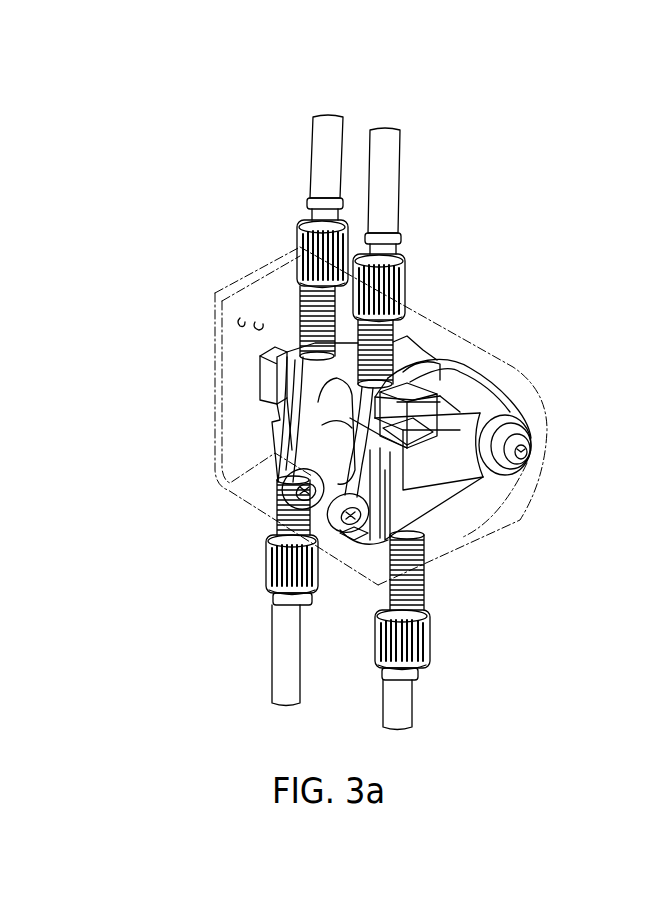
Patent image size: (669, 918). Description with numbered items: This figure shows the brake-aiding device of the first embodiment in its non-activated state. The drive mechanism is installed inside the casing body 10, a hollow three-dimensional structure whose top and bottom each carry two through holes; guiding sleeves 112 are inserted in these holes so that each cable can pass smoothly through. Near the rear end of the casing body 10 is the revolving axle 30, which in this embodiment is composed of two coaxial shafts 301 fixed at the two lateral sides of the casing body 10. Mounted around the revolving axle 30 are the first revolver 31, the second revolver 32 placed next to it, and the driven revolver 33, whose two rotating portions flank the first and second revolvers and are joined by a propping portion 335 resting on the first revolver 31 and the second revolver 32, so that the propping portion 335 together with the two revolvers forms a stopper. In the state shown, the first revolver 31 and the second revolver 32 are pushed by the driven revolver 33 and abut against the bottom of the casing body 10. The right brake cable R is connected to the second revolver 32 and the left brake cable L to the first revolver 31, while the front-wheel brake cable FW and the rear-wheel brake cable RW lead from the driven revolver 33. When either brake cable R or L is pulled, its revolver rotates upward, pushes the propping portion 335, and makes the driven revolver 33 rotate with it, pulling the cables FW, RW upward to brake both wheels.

The casing body 10 is at (458, 540).
The revolving axle 30 is at (408, 471).
The shafts 301 is at (531, 435).
The first revolver 31 is at (377, 537).
The second revolver 32 is at (318, 445).
The driven revolver 33 is at (432, 460).
The propping portion 335 is at (443, 387).
The guiding sleeves 112 is at (297, 240).
The right brake cable R is at (323, 150).
The left brake cable L is at (380, 186).
The front-wheel brake cable FW is at (283, 660).
The rear-wheel brake cable RW is at (402, 712).